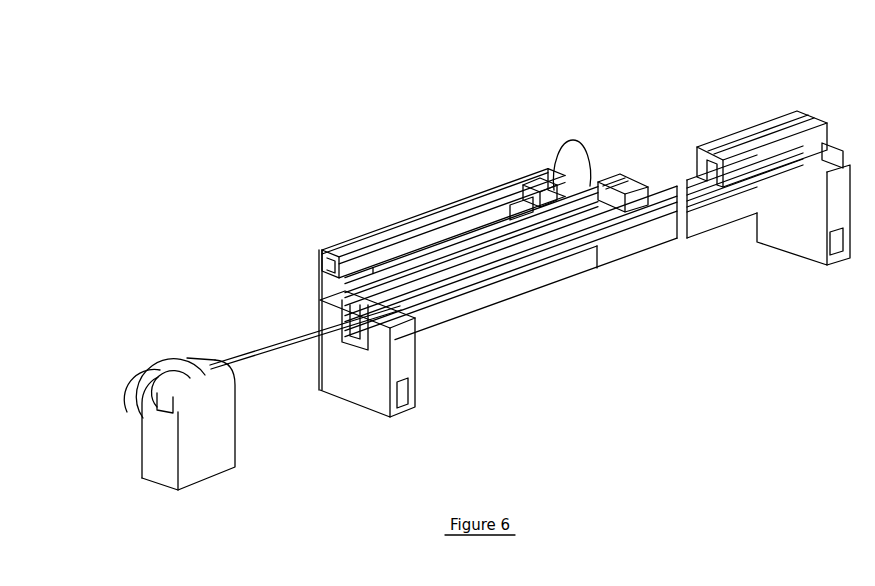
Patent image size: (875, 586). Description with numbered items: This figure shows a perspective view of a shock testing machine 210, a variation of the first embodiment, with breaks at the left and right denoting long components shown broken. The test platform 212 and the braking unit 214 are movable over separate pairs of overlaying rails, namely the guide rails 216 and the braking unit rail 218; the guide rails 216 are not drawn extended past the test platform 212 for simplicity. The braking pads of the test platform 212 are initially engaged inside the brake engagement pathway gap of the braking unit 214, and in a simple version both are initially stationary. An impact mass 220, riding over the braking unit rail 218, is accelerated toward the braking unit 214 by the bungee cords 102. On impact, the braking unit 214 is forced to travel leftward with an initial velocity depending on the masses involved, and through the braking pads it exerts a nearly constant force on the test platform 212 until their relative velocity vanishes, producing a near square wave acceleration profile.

The bungee cords 102 is at (477, 298).
The shock testing machine 210 is at (276, 70).
The test platform 212 is at (583, 197).
The braking unit 214 is at (568, 260).
The guide rails 216 is at (435, 216).
The braking unit rail 218 is at (313, 256).
The impact mass 220 is at (717, 128).